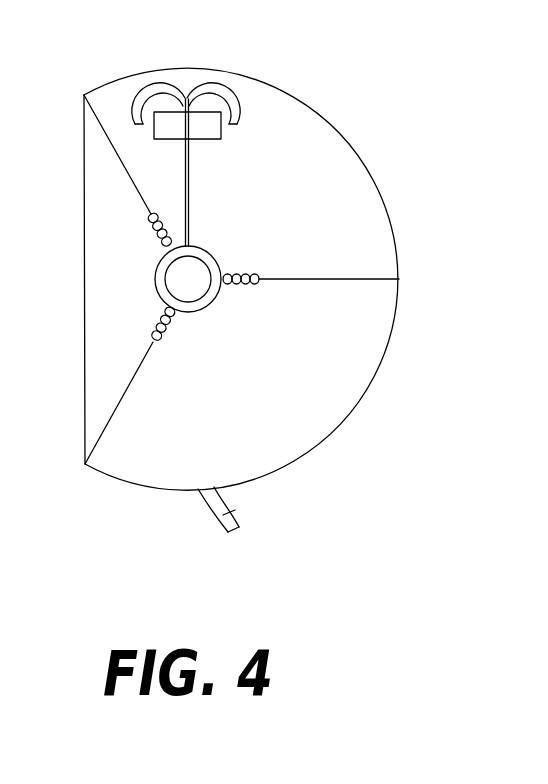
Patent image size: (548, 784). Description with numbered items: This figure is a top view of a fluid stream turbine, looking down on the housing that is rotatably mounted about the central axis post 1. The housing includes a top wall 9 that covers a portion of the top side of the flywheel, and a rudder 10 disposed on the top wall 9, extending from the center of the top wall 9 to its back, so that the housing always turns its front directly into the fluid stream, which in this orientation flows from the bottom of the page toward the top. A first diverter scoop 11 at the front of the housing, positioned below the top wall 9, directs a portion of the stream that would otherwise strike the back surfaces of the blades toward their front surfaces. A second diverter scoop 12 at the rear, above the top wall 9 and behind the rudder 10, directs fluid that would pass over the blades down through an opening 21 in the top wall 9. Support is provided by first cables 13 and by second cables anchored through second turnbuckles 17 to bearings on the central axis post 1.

The central axis post 1 is at (204, 303).
The top wall 9 is at (388, 212).
The rudder 10 is at (189, 186).
The first diverter scoop 11 is at (235, 510).
The second diverter scoop 12 is at (205, 82).
The first cable 13 is at (135, 372).
The second turnbuckle 17 is at (170, 221).
The opening 21 is at (165, 128).